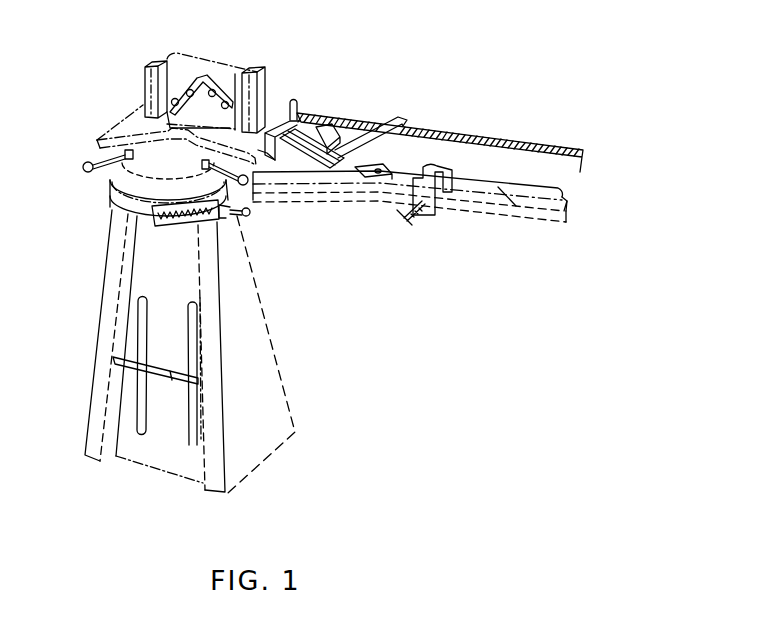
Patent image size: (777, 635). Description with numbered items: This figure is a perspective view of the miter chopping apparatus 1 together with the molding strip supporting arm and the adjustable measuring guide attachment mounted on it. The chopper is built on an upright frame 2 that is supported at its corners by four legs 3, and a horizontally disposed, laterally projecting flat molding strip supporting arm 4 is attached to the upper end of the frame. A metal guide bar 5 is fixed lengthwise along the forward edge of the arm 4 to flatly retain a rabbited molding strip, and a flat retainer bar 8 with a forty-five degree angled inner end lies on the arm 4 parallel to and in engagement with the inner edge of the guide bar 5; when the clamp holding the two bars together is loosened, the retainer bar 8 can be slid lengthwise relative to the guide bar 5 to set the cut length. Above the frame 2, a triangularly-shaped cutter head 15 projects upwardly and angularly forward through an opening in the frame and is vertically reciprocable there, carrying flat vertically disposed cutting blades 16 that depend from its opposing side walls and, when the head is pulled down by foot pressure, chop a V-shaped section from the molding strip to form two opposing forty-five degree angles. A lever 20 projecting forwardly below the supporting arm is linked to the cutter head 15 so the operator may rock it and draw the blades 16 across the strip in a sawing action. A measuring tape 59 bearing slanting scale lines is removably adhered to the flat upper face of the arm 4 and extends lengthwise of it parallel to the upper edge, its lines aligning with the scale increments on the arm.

The tube bending apparatus 1 is at (96, 92).
The upright frame 2 is at (250, 323).
The legs 3 is at (216, 438).
The molding strip supporting arm 4 is at (581, 178).
The guide bar 5 is at (362, 194).
The retainer bar 8 is at (522, 213).
The cutter head 15 is at (217, 86).
The cutting blades 16 is at (221, 53).
The lever 20 is at (250, 215).
The measuring tape 59 is at (503, 137).